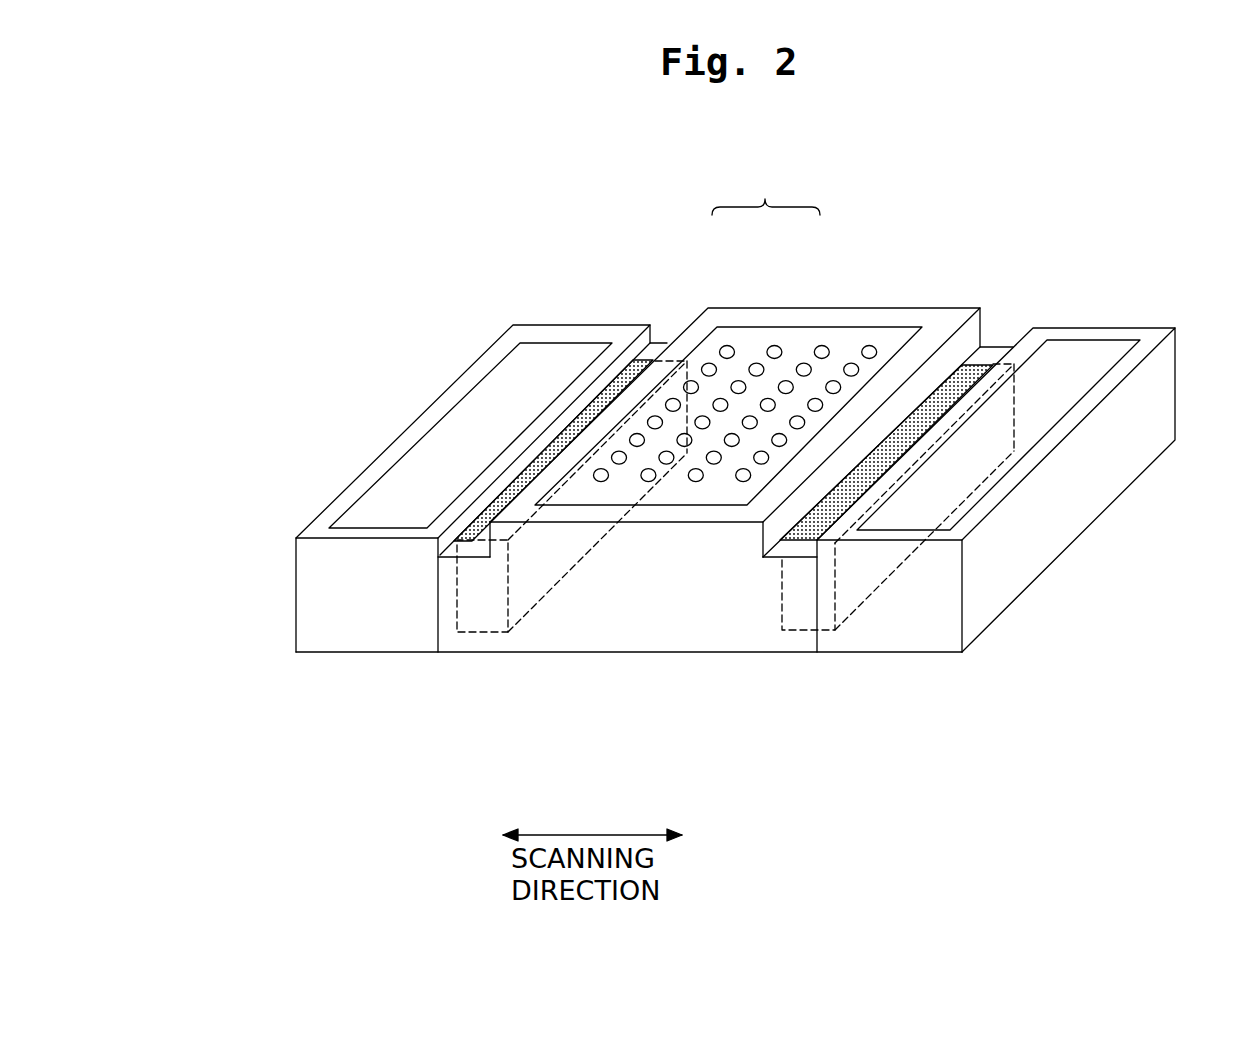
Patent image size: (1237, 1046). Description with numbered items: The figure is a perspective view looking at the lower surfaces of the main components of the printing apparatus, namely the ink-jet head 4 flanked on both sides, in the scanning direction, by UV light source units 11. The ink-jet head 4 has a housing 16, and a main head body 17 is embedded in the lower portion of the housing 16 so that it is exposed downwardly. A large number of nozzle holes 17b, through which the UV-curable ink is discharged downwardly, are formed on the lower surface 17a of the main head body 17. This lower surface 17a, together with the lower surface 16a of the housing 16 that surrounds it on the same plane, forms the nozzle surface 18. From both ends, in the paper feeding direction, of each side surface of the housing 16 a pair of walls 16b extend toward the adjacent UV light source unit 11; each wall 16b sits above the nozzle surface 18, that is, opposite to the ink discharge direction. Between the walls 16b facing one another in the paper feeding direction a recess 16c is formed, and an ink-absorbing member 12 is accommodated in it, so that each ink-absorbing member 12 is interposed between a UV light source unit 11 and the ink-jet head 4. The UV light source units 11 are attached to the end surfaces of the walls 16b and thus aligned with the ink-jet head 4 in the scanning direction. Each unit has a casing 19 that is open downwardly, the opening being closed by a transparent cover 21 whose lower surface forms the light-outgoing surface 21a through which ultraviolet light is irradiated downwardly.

The ink-jet head 4 is at (735, 503).
The UV light source unit 11 is at (325, 670).
The ink-absorbing member 12 is at (614, 388).
The housing 16 is at (663, 634).
The lower surface of the housing 16a is at (693, 338).
The wall 16b is at (653, 348).
The recess 16c is at (476, 548).
The main head body 17 is at (597, 495).
The lower surface of the main head body 17a is at (822, 345).
The nozzle hole 17b is at (869, 345).
The nozzle surface 18 is at (766, 190).
The casing 19 is at (296, 598).
The transparent cover 21 is at (427, 460).
The light-outgoing surface 21a is at (512, 382).